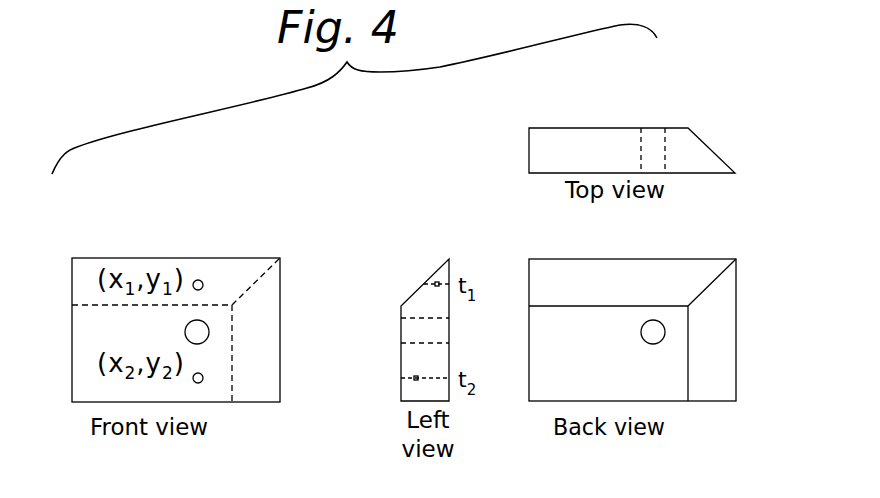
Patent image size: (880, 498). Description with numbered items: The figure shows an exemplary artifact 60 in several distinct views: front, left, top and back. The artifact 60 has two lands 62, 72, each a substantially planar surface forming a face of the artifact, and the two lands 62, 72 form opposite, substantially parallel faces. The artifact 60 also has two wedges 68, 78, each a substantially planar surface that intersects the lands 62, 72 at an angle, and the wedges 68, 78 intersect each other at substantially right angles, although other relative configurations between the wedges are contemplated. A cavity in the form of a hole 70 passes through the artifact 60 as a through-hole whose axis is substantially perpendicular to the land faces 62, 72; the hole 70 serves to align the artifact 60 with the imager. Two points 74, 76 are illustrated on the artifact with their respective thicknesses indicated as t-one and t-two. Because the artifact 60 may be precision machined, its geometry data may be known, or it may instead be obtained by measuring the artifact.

The artifact 60 is at (388, 160).
The land 62 is at (87, 270).
The wedge 68 is at (427, 279).
The hole 70 is at (208, 334).
The land 72 is at (393, 332).
The point 74 is at (203, 281).
The point 76 is at (200, 383).
The wedge 78 is at (712, 147).